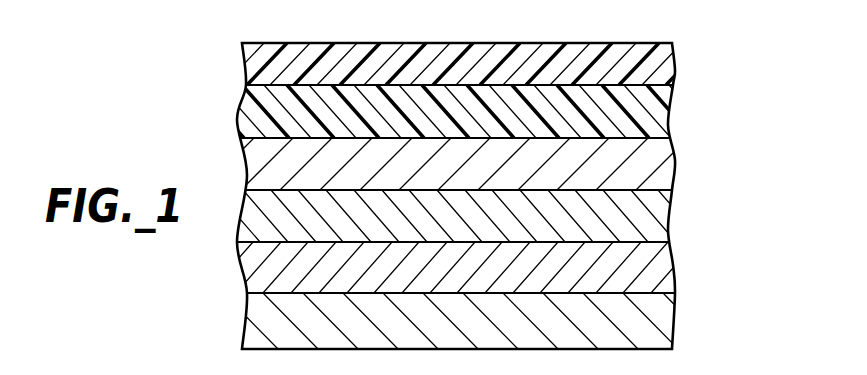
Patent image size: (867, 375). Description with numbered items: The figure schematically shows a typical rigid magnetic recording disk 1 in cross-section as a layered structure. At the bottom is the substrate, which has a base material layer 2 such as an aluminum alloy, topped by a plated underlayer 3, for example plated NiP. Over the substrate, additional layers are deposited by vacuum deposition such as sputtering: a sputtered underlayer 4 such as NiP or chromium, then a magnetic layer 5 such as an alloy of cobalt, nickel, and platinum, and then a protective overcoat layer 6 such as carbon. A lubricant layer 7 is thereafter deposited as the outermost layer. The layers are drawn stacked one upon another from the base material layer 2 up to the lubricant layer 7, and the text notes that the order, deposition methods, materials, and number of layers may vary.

The magnetic recording disk 1 is at (506, 35).
The base material layer 2 is at (674, 316).
The plated underlayer 3 is at (673, 265).
The sputtered underlayer 4 is at (668, 215).
The magnetic layer 5 is at (674, 159).
The protective overcoat layer 6 is at (670, 109).
The lubricant layer 7 is at (673, 62).